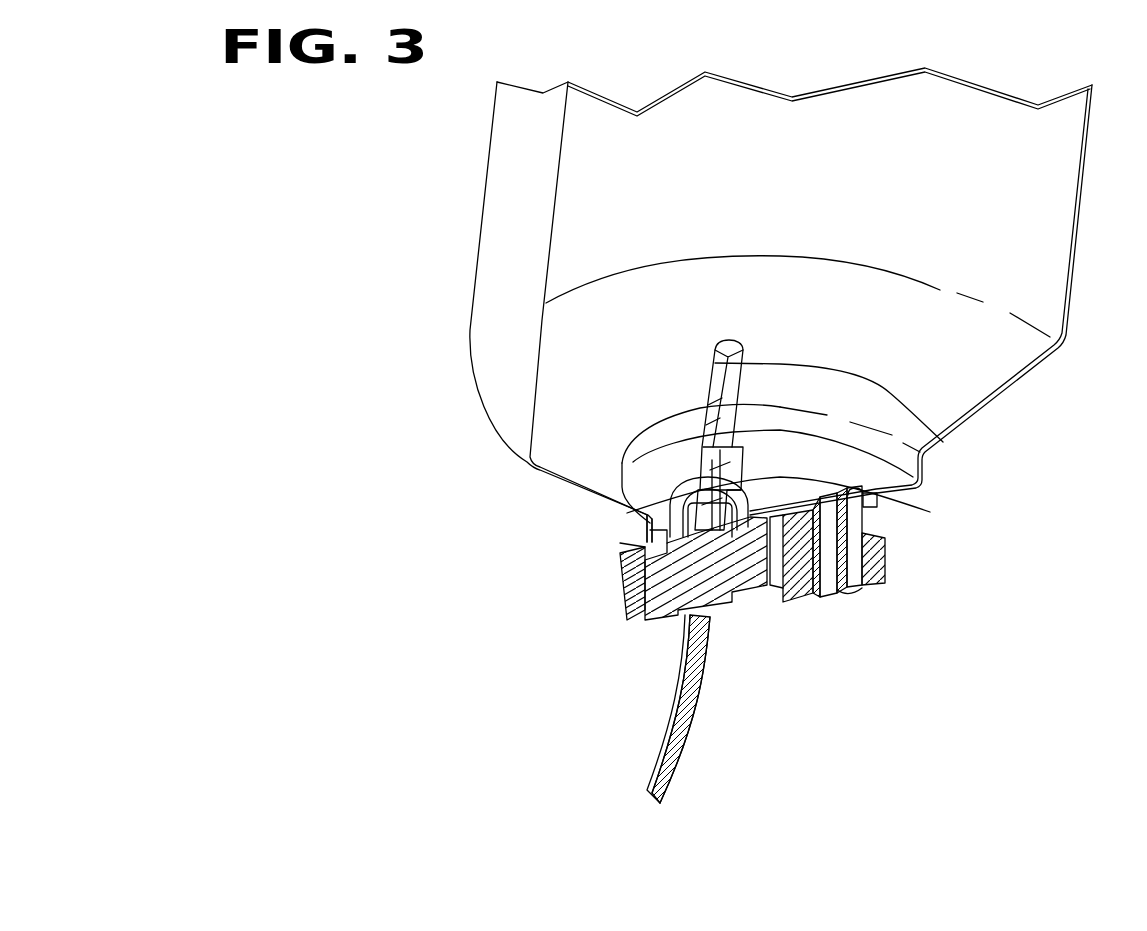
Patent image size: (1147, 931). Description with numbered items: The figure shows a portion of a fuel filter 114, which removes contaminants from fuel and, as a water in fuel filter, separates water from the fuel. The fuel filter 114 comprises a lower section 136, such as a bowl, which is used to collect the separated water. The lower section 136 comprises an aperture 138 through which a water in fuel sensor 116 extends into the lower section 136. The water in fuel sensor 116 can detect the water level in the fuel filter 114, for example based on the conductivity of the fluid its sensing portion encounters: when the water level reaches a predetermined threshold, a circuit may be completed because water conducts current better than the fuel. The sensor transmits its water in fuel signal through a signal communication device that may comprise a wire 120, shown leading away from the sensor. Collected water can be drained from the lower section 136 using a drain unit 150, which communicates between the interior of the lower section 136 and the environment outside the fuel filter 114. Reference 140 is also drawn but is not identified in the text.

The fuel filter 114 is at (483, 313).
The lower section 136 is at (1068, 285).
The receptacle bowl 140 is at (943, 442).
The aperture 138 is at (877, 500).
The water in fuel sensor 116 is at (620, 598).
The drain unit 150 is at (857, 590).
The wire 120 is at (703, 667).